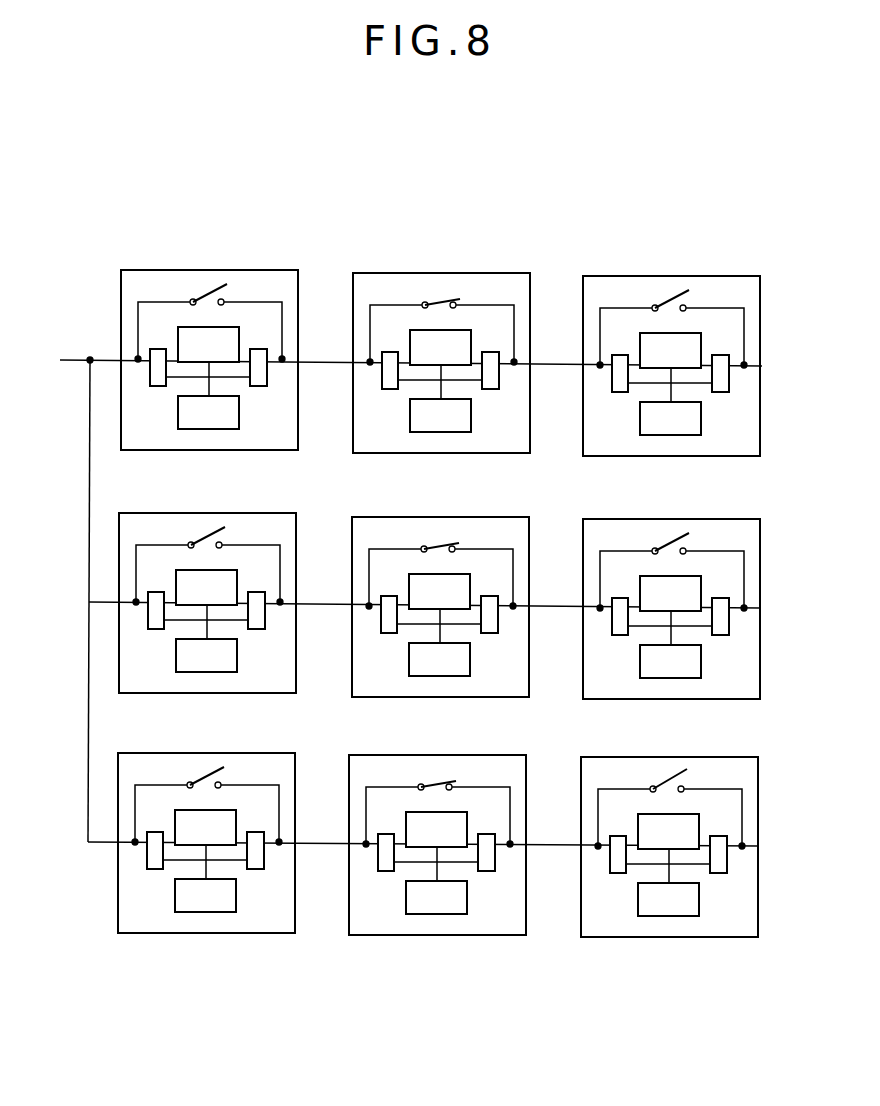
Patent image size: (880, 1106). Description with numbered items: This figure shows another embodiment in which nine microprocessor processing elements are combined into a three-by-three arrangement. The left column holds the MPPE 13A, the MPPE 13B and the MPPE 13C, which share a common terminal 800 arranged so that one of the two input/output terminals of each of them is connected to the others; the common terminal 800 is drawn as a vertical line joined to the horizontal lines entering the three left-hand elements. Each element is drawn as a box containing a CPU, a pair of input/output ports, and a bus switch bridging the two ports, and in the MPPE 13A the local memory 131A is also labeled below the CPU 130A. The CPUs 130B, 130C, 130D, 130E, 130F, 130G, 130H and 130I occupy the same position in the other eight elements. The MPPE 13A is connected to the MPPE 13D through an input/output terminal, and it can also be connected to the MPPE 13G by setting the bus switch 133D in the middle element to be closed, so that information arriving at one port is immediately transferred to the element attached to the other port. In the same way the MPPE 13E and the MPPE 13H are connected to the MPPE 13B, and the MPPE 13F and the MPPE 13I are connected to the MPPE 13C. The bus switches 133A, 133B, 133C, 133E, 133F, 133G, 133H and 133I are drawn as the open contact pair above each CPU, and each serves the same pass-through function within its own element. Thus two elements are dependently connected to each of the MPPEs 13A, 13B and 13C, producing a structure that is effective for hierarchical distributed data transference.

The common terminal 800 is at (73, 358).
The MPPE 13A is at (128, 270).
The MPPE 13B is at (152, 513).
The MPPE 13C is at (128, 753).
The MPPE 13D is at (363, 273).
The MPPE 13E is at (377, 517).
The MPPE 13F is at (362, 755).
The MPPE 13G is at (595, 276).
The MPPE 13H is at (620, 519).
The MPPE 13I is at (590, 757).
The CPU 130A is at (185, 330).
The CPU 130B is at (185, 570).
The CPU 130C is at (183, 807).
The CPU 130D is at (420, 332).
The CPU 130E is at (417, 573).
The CPU 130F is at (412, 808).
The CPU 130G is at (652, 333).
The CPU 130H is at (643, 574).
The CPU 130I is at (648, 810).
The bus switch 133A is at (215, 287).
The bus switch 133B is at (213, 529).
The bus switch 133C is at (210, 770).
The bus switch 133D is at (447, 299).
The bus switch 133E is at (445, 543).
The bus switch 133F is at (447, 780).
The bus switch 133G is at (680, 290).
The bus switch 133H is at (673, 533).
The bus switch 133I is at (675, 770).
The local memory 131A is at (237, 413).